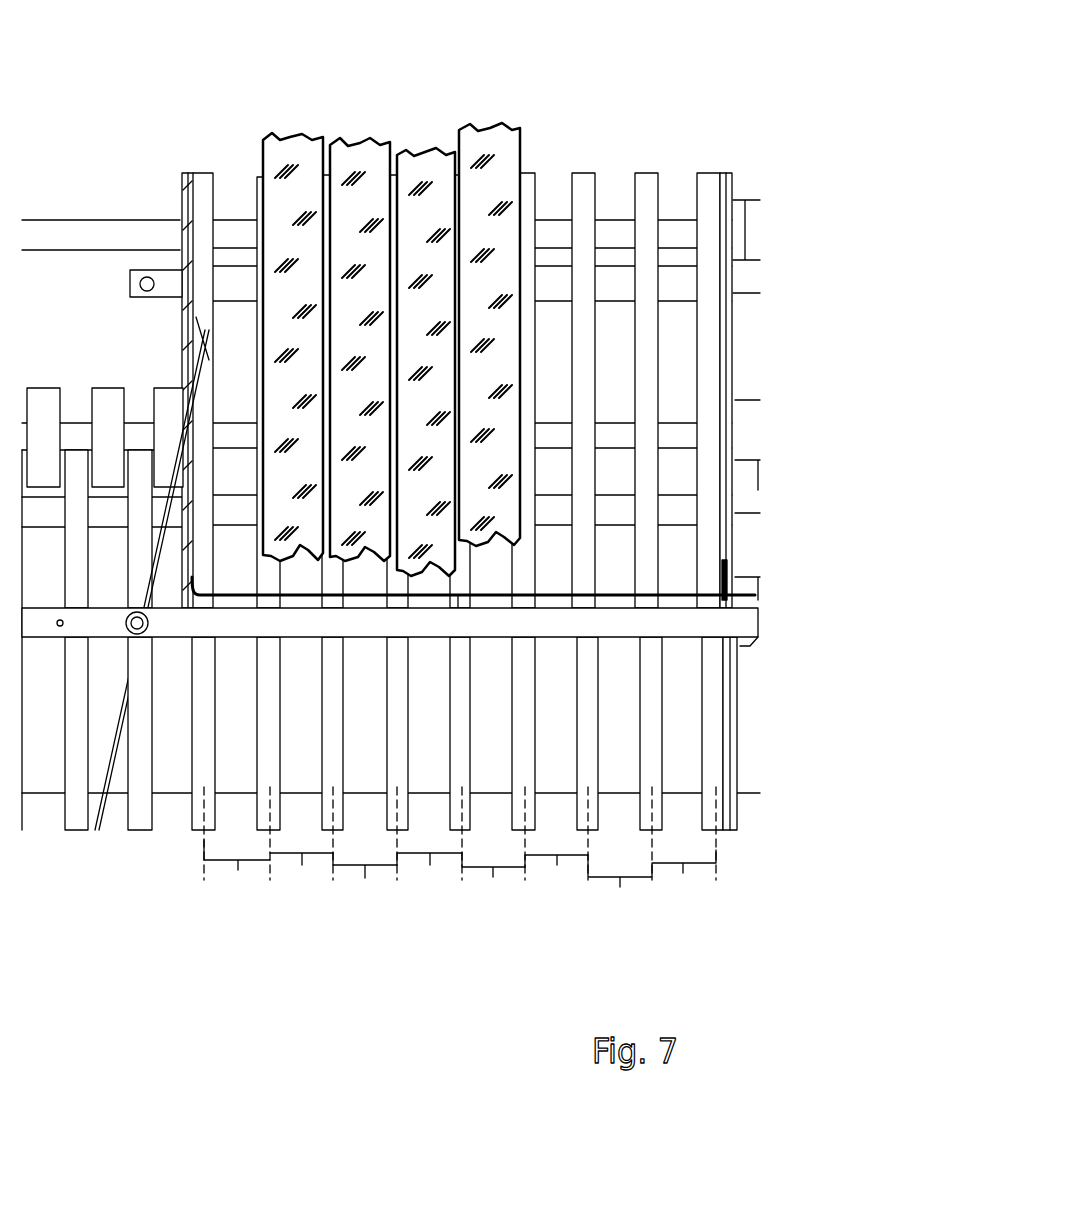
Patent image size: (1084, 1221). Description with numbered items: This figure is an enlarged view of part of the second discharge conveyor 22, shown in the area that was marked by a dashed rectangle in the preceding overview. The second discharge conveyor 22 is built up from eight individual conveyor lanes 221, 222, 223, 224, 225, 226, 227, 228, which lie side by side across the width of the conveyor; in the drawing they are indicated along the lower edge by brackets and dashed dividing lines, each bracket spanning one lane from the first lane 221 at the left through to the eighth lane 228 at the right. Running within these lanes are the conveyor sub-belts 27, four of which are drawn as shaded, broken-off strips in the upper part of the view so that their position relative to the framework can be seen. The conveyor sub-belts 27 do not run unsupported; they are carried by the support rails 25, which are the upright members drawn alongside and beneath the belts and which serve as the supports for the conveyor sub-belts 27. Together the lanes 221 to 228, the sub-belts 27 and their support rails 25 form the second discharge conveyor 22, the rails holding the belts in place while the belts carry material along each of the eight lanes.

The second discharge conveyor 22 is at (378, 596).
The conveyor lane 221 is at (227, 862).
The conveyor lane 222 is at (287, 855).
The conveyor lane 223 is at (347, 867).
The conveyor lane 224 is at (417, 855).
The conveyor lane 225 is at (476, 869).
The conveyor lane 226 is at (563, 857).
The conveyor lane 227 is at (633, 879).
The conveyor lane 228 is at (698, 865).
The support rail 25 is at (580, 180).
The conveyor sub-belt 27 is at (500, 120).